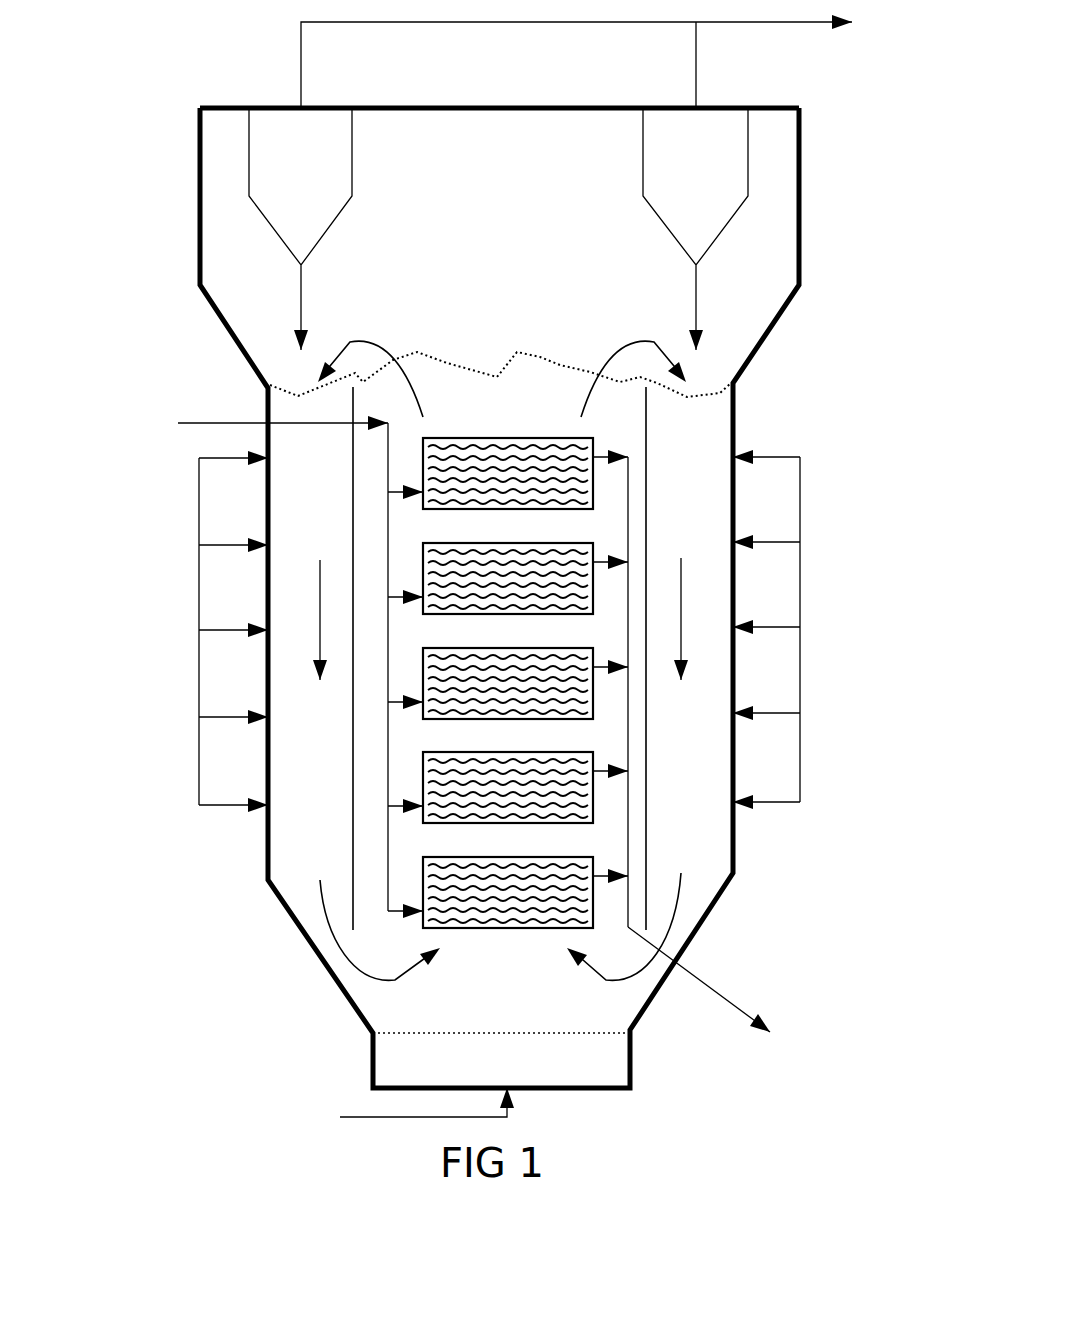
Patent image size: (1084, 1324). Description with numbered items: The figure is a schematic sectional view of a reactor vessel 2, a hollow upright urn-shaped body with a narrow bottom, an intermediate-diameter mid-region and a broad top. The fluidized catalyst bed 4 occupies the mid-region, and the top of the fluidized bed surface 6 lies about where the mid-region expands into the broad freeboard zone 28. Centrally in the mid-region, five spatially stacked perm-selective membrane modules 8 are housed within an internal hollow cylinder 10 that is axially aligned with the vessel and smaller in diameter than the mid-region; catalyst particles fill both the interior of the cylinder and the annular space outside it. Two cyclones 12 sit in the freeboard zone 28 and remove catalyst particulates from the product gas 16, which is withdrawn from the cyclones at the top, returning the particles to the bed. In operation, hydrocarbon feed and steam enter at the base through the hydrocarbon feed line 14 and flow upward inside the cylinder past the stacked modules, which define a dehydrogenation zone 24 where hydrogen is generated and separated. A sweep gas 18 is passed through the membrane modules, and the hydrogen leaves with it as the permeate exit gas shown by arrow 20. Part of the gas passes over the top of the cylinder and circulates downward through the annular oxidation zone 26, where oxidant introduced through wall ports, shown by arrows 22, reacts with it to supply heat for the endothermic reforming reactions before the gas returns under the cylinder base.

The reactor vessel 2 is at (837, 323).
The fluidized catalyst bed 4 is at (603, 835).
The top surface of the fluidized bed 6 is at (315, 383).
The perm-selective membrane modules 8 is at (447, 897).
The internal hollow cylinder 10 is at (646, 497).
The cyclones 12 is at (237, 190).
The hydrocarbon feed line 14 is at (409, 1109).
The product gas 16 is at (596, 58).
The sweep gas 18 is at (264, 424).
The permeate exit gas arrow 20 is at (564, 962).
The oxidant ports arrows 22 is at (199, 630).
The dehydrogenation zone 24 is at (420, 740).
The oxidation zone 26 is at (308, 509).
The freeboard zone 28 is at (780, 230).